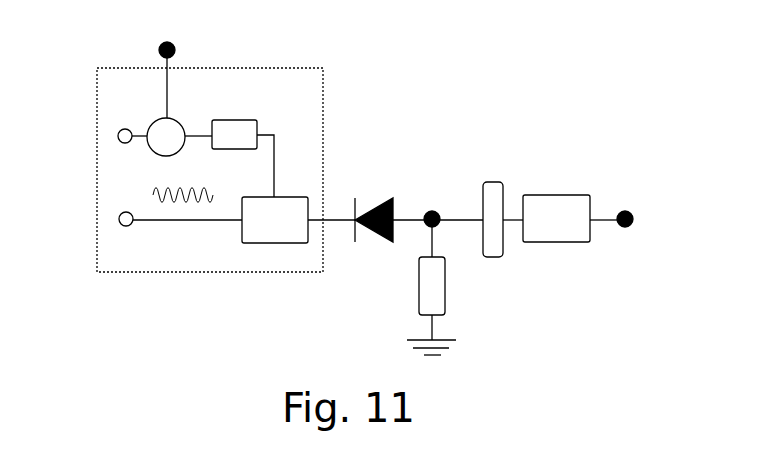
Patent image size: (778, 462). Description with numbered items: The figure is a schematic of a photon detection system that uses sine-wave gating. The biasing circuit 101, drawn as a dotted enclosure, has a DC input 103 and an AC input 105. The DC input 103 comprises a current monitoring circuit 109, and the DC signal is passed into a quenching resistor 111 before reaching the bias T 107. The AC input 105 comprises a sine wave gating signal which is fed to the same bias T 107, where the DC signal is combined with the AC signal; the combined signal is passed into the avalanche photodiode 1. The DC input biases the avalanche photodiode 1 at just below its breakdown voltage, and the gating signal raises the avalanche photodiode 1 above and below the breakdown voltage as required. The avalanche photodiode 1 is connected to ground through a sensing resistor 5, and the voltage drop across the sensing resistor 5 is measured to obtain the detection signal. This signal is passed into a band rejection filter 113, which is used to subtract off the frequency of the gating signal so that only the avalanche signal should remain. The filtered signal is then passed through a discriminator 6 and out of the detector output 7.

The avalanche photodiode 1 is at (378, 195).
The sensing resistor 5 is at (436, 290).
The discriminator 6 is at (558, 194).
The detector output 7 is at (637, 198).
The biasing circuit 101 is at (145, 278).
The DC input 103 is at (118, 133).
The AC input 105 is at (119, 222).
The bias T 107 is at (272, 243).
The current monitoring circuit 109 is at (178, 117).
The quenching resistor 111 is at (246, 119).
The band rejection filter 113 is at (492, 182).